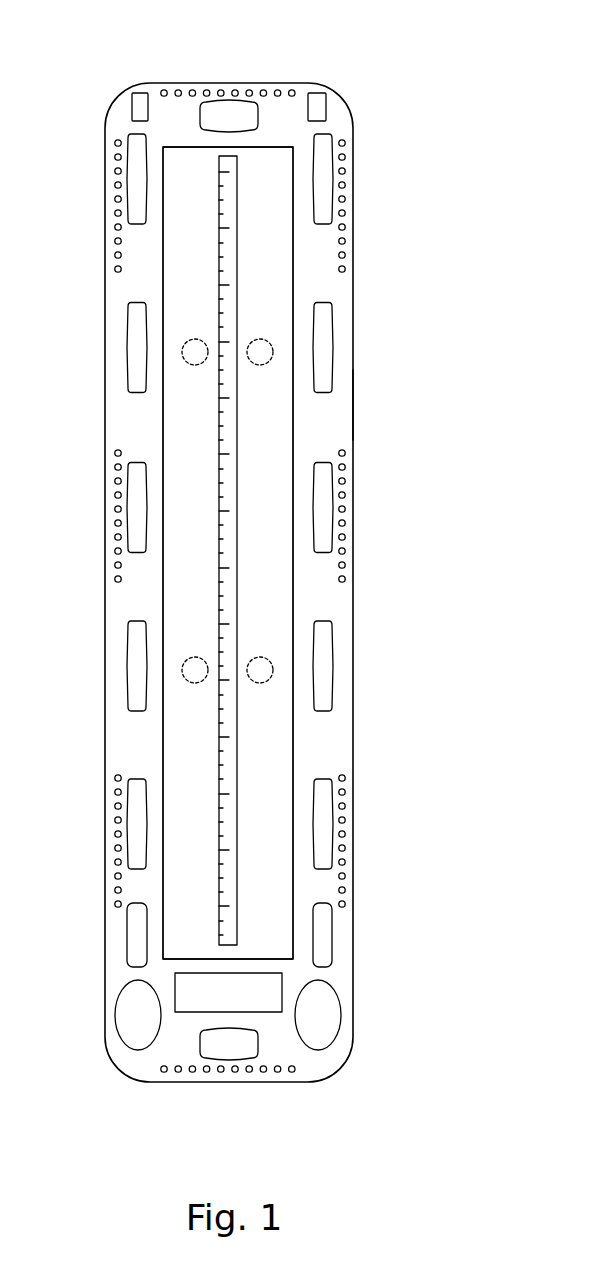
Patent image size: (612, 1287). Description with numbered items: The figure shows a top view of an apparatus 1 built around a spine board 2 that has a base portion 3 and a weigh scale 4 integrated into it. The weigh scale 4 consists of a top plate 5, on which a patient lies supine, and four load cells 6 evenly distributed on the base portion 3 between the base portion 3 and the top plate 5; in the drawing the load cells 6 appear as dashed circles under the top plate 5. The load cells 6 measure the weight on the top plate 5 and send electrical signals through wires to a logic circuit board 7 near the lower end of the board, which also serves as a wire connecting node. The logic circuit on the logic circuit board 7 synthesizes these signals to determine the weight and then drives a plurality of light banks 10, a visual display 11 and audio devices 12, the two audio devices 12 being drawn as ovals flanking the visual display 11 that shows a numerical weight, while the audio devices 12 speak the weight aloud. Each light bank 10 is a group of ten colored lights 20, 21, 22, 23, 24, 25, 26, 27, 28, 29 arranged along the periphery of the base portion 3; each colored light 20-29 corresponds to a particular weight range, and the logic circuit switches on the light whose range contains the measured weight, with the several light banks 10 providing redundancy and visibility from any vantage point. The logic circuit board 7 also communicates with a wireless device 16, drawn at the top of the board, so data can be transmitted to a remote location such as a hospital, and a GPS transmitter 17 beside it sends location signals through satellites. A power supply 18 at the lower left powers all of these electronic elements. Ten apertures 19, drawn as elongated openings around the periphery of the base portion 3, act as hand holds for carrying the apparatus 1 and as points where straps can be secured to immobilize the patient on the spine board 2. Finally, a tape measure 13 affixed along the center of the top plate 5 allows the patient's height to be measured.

The apparatus 1 is at (404, 85).
The spine board 2 is at (353, 407).
The base portion 3 is at (337, 432).
The weigh scale 4 is at (292, 588).
The top plate 5 is at (270, 603).
The load cells 6 is at (193, 352).
The logic circuit board 7 is at (322, 940).
The light bank 10 is at (433, 852).
The visual display 11 is at (188, 982).
The audio devices 12 is at (140, 1018).
The tape measure 13 is at (225, 413).
The wireless device 16 is at (317, 100).
The GPS transmitter 17 is at (140, 102).
The power supply 18 is at (135, 940).
The apertures 19 is at (137, 327).
The colored light 20 is at (345, 905).
The colored light 21 is at (345, 891).
The colored light 22 is at (345, 877).
The colored light 23 is at (345, 863).
The colored light 24 is at (345, 849).
The colored light 25 is at (345, 835).
The colored light 26 is at (345, 821).
The colored light 27 is at (345, 807).
The colored light 28 is at (345, 793).
The colored light 29 is at (345, 779).